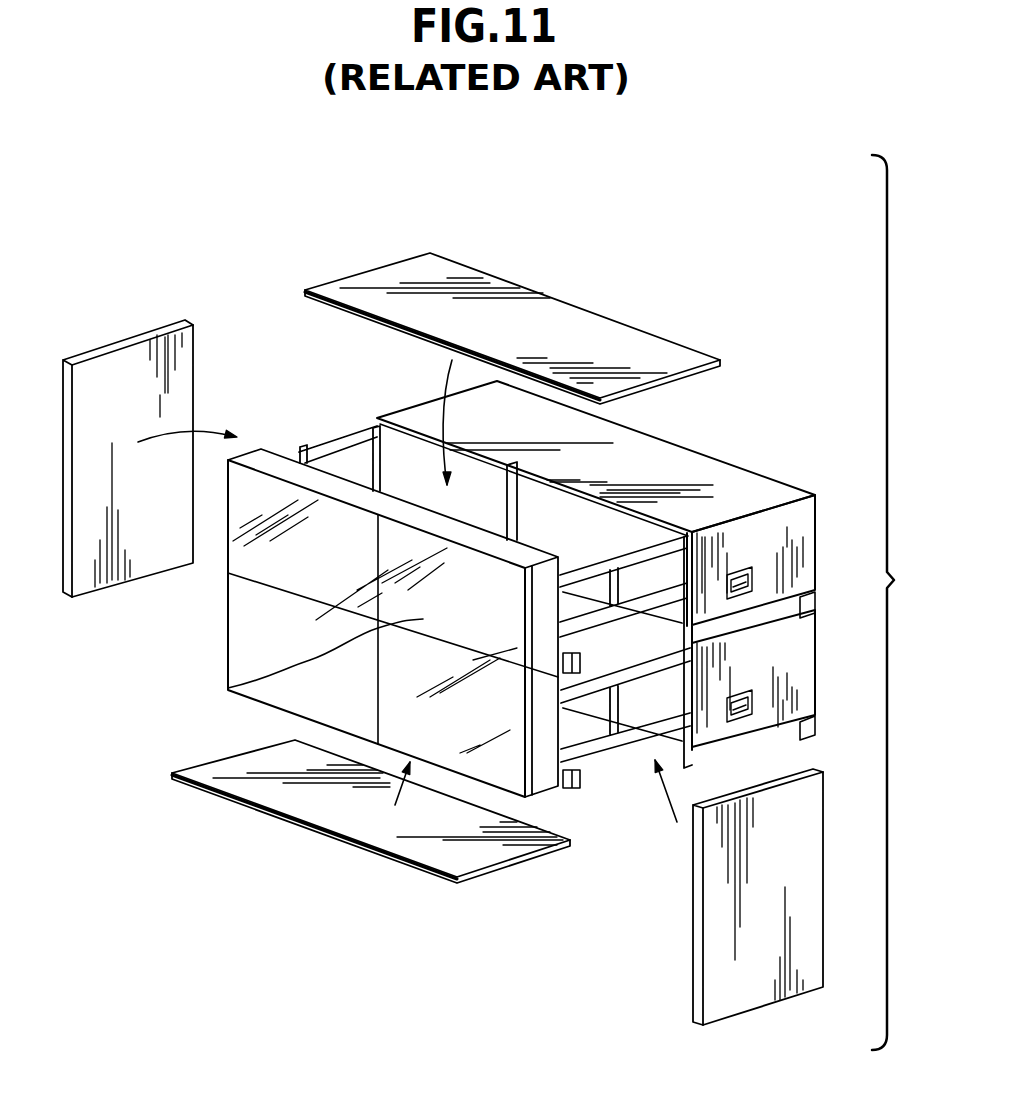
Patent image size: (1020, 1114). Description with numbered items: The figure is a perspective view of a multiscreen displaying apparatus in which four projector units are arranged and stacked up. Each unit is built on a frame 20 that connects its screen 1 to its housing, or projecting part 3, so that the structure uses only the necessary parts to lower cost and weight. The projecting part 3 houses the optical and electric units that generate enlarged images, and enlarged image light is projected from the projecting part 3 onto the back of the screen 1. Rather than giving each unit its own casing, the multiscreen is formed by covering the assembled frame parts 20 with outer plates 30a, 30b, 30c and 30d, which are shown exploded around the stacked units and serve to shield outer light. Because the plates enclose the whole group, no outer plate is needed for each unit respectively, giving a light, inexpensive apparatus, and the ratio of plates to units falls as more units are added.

The screen 1 is at (413, 708).
The housing (projecting part) 3 is at (800, 668).
The frame 20 is at (338, 433).
The outer plate 30a is at (120, 368).
The outer plate 30b is at (565, 312).
The outer plate 30c is at (803, 850).
The outer plate 30d is at (430, 850).